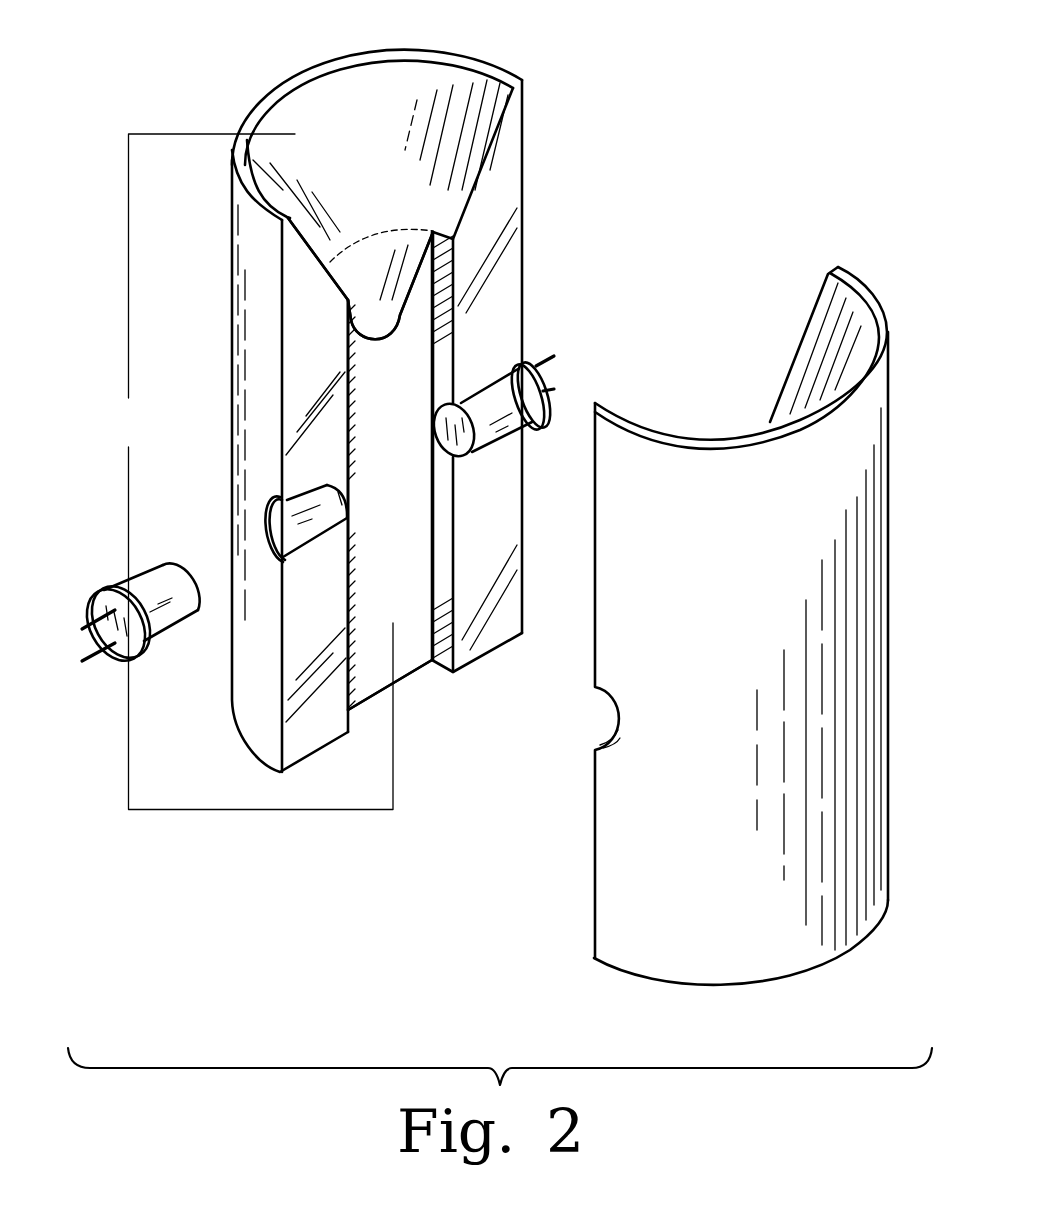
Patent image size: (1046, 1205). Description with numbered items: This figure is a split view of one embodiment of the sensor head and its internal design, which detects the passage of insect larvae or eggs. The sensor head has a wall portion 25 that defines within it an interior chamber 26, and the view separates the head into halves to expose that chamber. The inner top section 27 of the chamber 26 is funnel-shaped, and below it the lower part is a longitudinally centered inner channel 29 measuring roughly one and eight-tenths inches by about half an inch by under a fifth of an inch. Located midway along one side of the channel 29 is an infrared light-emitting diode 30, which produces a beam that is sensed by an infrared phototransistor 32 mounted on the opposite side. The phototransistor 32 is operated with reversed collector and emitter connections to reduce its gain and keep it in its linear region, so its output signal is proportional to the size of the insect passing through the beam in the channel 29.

The wall portion 25 is at (232, 277).
The interior chamber 26 is at (251, 472).
The inner top section 27 is at (349, 138).
The inner channel 29 is at (400, 578).
The infrared light-emitting diode 30 is at (88, 598).
The infrared phototransistor 32 is at (547, 373).